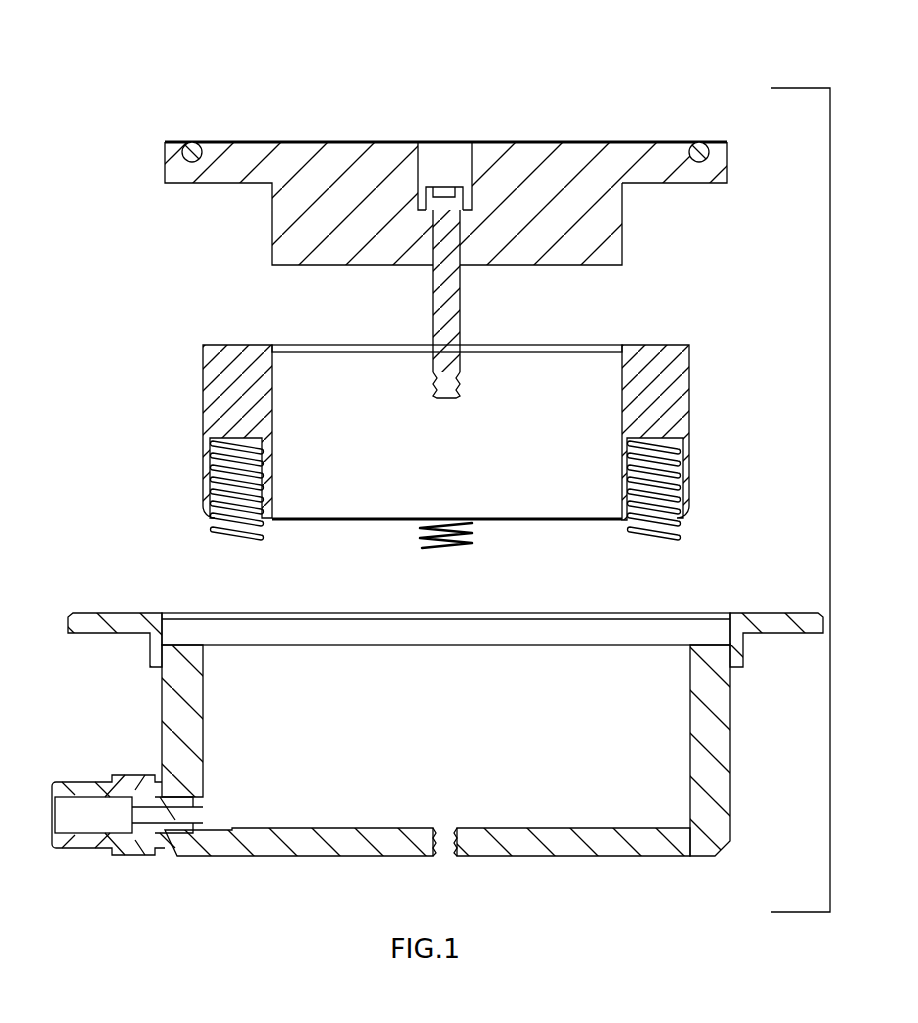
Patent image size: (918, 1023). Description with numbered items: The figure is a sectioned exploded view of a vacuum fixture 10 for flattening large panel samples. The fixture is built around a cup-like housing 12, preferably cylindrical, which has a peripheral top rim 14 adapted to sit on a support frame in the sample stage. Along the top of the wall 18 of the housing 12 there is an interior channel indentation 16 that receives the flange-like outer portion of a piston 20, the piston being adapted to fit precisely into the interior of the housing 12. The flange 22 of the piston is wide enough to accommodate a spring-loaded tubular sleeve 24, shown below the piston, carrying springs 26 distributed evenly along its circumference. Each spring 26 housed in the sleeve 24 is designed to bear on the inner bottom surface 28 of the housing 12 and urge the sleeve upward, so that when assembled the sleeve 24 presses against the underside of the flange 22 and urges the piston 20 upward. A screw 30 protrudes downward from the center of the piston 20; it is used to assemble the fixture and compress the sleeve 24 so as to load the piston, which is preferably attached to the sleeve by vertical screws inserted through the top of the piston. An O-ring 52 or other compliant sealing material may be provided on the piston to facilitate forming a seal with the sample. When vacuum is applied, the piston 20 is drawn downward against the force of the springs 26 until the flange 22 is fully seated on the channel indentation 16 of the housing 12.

The vacuum fixture 10 is at (605, 63).
The cup-like housing 12 is at (145, 729).
The peripheral top rim 14 is at (110, 620).
The interior channel indentation 16 is at (705, 632).
The wall 18 is at (710, 738).
The piston 20 is at (455, 228).
The flange 22 is at (668, 162).
The spring-loaded tubular sleeve 24 is at (703, 369).
The springs 26 is at (682, 530).
The inner bottom surface 28 is at (350, 830).
The screw 30 is at (456, 298).
The O-ring 52 is at (203, 143).